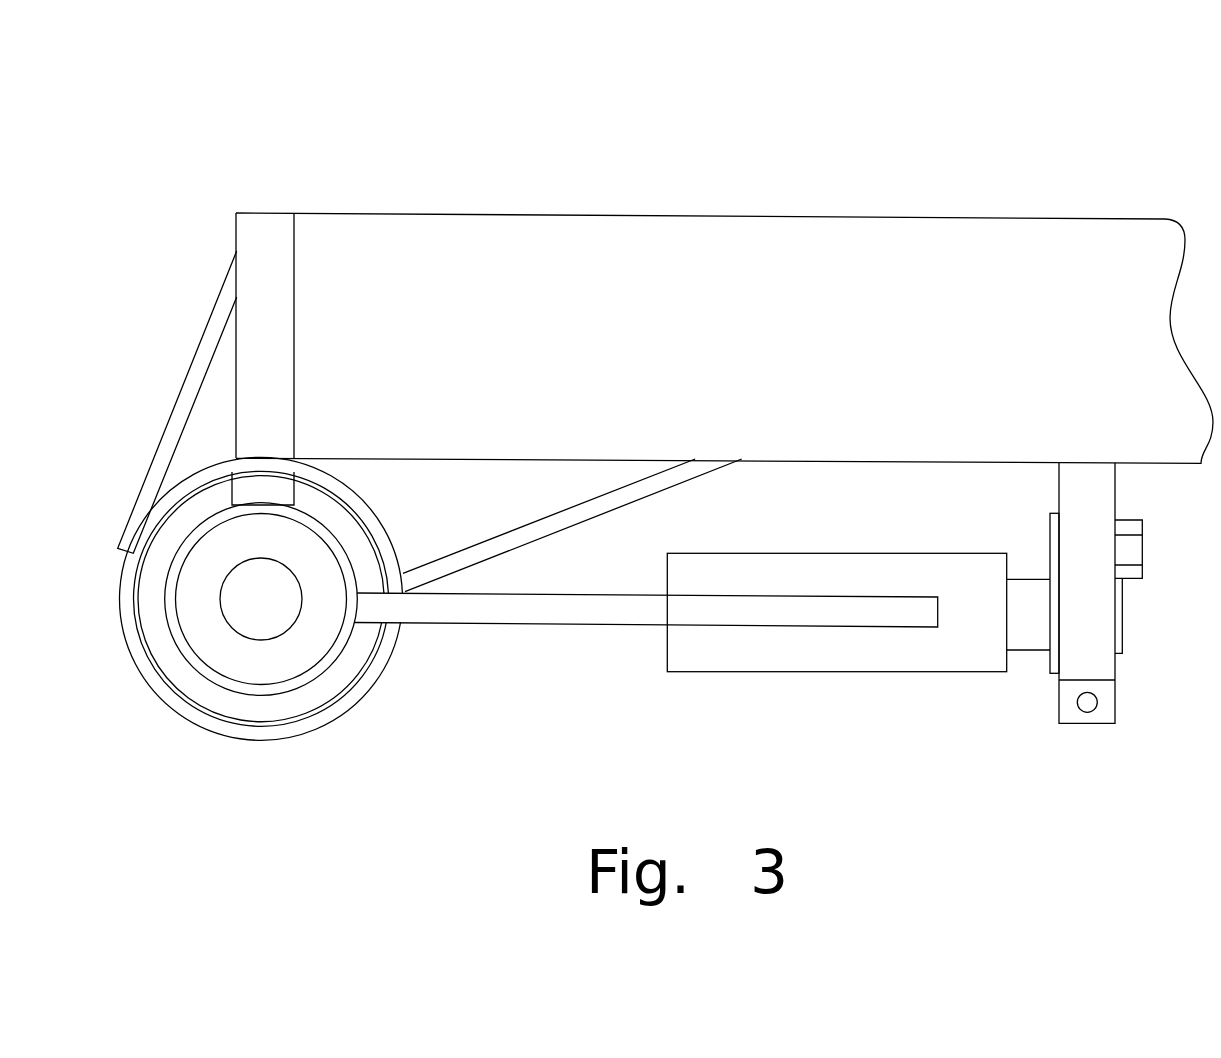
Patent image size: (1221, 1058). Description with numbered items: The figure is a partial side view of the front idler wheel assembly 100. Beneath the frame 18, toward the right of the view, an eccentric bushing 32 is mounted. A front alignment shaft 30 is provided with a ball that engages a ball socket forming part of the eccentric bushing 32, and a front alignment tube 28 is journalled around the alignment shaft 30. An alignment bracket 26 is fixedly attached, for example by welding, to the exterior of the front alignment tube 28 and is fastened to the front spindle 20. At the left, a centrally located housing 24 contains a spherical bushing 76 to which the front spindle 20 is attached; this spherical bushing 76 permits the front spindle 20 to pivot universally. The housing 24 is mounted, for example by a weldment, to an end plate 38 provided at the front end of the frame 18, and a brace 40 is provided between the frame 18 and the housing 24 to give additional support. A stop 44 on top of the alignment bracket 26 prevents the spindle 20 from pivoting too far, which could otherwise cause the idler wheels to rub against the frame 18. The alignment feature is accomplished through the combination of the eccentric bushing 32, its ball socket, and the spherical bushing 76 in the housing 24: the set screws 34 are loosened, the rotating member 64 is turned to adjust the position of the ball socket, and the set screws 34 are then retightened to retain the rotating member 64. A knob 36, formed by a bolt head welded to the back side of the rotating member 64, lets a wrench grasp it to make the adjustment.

The front idler wheel assembly 100 is at (222, 143).
The frame 18 is at (678, 342).
The end plate 38 is at (288, 312).
The brace 40 is at (190, 378).
The stop 44 is at (283, 488).
The housing 24 is at (350, 707).
The spherical bushing 76 is at (249, 715).
The front spindle 20 is at (266, 677).
The alignment bracket 26 is at (545, 613).
The front alignment tube 28 is at (760, 658).
The front alignment shaft 30 is at (1038, 582).
The rotating member 64 is at (1052, 673).
The eccentric bushing 32 is at (1110, 488).
The knob 36 is at (1137, 552).
The set screw 34 is at (1087, 712).